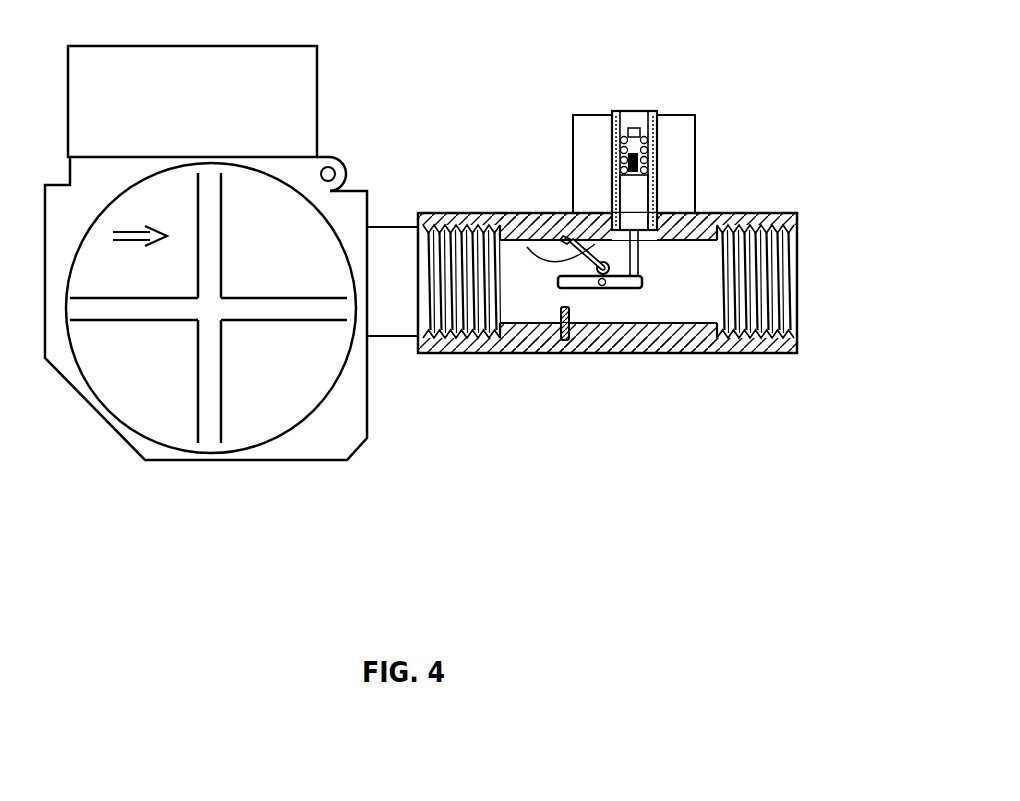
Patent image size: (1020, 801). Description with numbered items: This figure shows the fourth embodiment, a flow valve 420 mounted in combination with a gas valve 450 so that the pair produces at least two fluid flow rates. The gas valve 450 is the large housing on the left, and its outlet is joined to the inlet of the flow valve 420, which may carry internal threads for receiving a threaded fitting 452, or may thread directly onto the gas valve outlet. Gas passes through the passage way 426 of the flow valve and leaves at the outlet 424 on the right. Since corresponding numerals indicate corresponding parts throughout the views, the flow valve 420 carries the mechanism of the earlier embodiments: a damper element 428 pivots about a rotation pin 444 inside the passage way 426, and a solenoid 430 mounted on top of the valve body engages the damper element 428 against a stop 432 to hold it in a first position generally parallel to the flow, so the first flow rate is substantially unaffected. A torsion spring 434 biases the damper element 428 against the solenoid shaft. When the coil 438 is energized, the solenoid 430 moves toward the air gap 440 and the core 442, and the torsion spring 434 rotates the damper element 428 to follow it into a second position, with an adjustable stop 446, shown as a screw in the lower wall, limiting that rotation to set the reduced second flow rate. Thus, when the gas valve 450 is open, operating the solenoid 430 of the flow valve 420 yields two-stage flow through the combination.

The flow valve 420 is at (478, 118).
The outlet / flow direction 424 is at (810, 284).
The inlet passage of valve body 426 is at (527, 320).
The valve plate 428 is at (627, 287).
The solenoid 430 is at (700, 207).
The pivot arm 432 is at (568, 232).
The arm travel path 434 is at (527, 247).
The solenoid housing 438 is at (683, 140).
The solenoid coil 440 is at (657, 135).
The spring stop 442 is at (632, 130).
The pivot pin 444 is at (603, 287).
The valve seat stop 446 is at (563, 347).
The gas valve 450 is at (285, 450).
The threaded fitting 452 is at (392, 303).